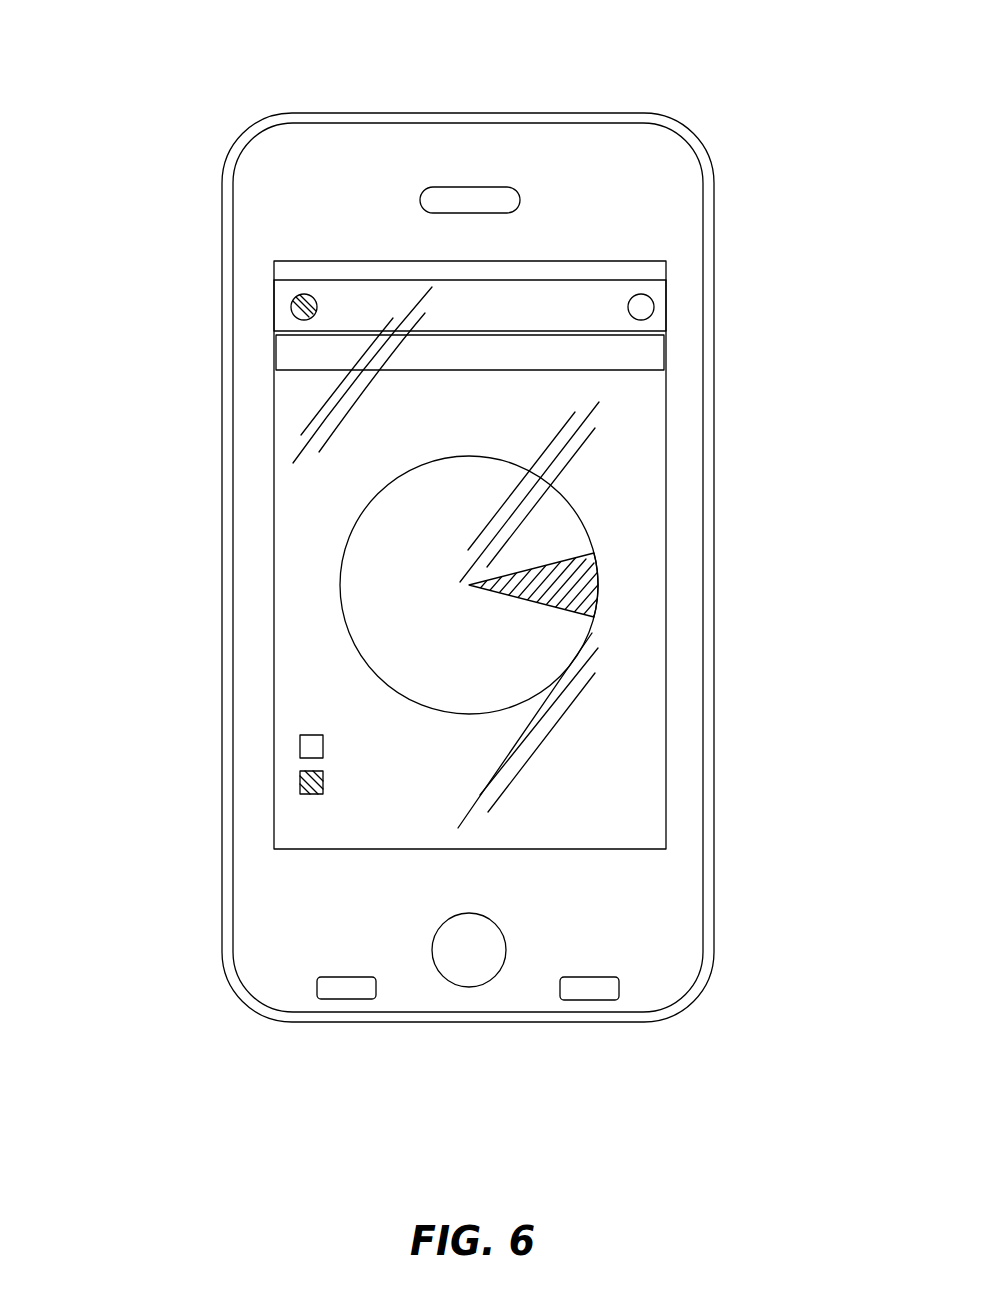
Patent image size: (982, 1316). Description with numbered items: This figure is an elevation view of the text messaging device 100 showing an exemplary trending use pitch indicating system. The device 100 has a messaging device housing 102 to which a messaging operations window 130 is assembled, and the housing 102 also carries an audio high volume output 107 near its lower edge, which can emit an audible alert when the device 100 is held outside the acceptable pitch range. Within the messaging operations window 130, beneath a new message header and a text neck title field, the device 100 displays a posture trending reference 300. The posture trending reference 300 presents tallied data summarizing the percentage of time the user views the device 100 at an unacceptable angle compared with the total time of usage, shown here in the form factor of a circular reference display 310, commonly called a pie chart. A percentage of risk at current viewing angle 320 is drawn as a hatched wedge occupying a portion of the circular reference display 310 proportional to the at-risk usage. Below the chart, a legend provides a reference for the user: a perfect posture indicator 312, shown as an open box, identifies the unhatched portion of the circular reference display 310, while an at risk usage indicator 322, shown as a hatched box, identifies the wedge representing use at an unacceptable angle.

The text messaging device 100 is at (436, 537).
The messaging device housing 102 is at (715, 550).
The audio high volume output 107 is at (348, 990).
The messaging operations window 130 is at (668, 478).
The posture trending reference 300 is at (461, 619).
The circular reference display 310 is at (362, 652).
The perfect posture indicator 312 is at (300, 748).
The percentage of risk at current viewing angle 320 is at (598, 590).
The at risk usage indicator 322 is at (300, 783).